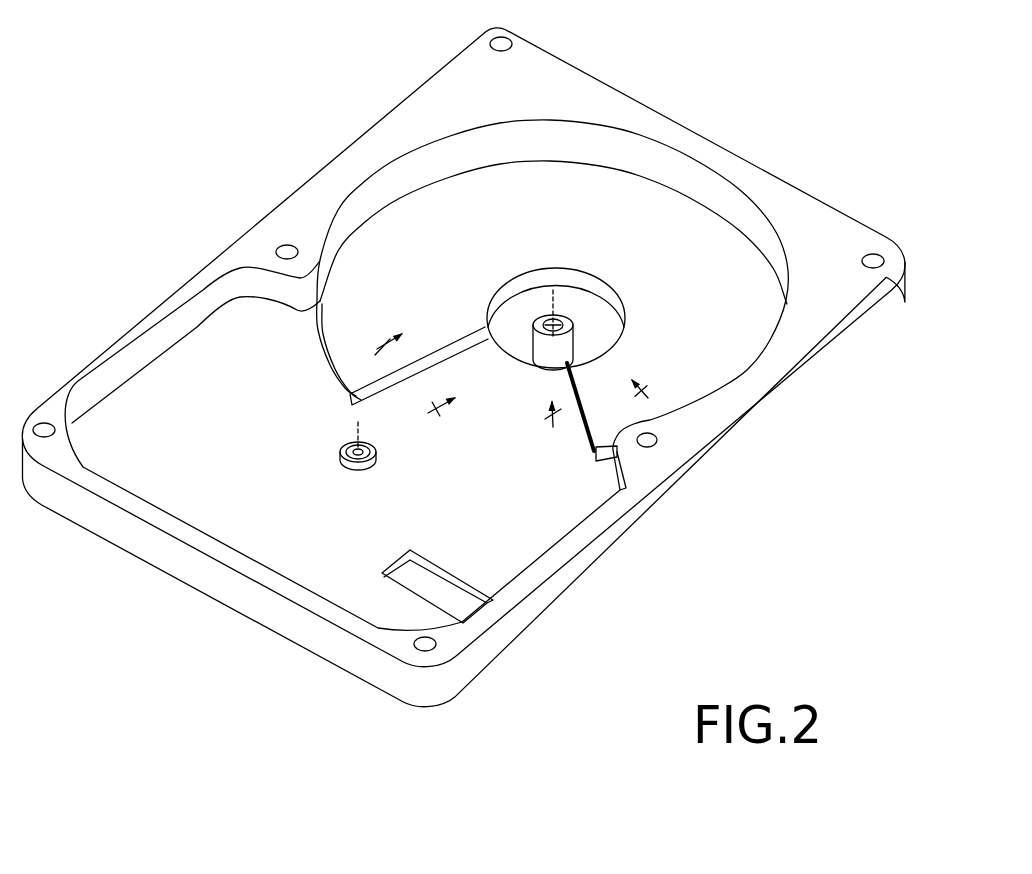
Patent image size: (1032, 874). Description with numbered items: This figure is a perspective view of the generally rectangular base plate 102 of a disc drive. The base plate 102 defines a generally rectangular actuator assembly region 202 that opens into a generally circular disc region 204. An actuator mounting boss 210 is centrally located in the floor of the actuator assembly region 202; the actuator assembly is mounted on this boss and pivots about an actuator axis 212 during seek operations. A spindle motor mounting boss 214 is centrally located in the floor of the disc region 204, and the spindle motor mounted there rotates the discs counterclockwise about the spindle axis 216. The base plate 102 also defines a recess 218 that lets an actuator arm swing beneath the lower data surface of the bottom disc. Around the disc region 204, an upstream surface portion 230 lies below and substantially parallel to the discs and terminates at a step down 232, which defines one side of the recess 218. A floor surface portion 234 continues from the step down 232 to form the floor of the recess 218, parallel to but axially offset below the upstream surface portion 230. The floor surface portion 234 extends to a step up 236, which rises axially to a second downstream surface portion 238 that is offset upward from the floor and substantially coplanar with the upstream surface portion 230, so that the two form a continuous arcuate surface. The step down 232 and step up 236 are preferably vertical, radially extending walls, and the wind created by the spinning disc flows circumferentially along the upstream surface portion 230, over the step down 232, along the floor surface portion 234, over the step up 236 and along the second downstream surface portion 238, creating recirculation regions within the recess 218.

The base plate 102 is at (183, 151).
The actuator assembly region 202 is at (185, 383).
The disc region 204 is at (728, 359).
The actuator mounting boss 210 is at (338, 444).
The actuator axis 212 is at (380, 434).
The spindle motor mounting boss 214 is at (539, 320).
The spindle axis 216 is at (556, 293).
The recess 218 is at (513, 443).
The upstream surface portion 230 is at (468, 307).
The step down 232 is at (457, 350).
The floor surface portion 234 is at (514, 429).
The step up 236 is at (580, 428).
The second downstream surface portion 238 is at (629, 389).